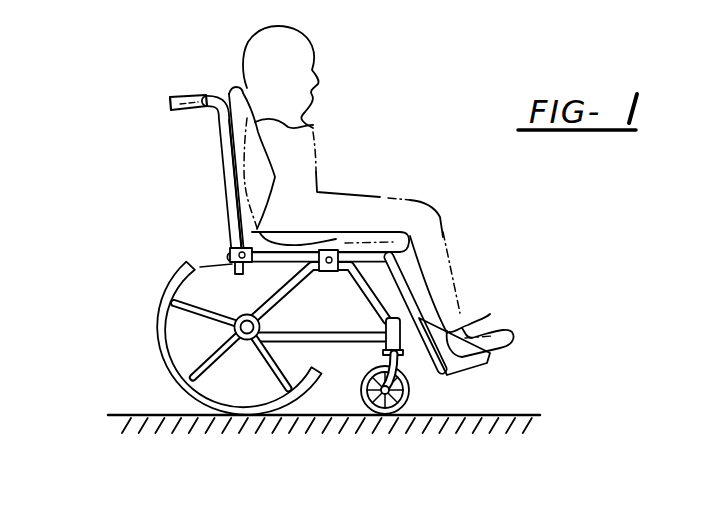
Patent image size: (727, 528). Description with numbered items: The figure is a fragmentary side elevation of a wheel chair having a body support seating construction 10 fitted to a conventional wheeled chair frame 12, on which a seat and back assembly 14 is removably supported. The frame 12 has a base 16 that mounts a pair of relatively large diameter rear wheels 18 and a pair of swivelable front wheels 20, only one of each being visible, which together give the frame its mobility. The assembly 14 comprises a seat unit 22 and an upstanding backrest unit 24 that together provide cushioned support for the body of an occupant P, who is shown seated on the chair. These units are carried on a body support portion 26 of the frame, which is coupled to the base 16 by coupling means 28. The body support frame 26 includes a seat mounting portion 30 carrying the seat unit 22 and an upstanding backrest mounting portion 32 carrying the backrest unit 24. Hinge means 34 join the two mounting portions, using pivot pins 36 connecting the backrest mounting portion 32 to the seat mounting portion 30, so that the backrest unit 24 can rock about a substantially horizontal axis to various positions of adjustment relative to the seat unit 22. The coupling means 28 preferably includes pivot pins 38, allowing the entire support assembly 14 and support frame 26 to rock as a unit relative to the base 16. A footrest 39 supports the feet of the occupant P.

The body support seating construction 10 is at (197, 157).
The wheeled chair frame 12 is at (205, 92).
The seat and back assembly 14 is at (237, 84).
The base 16 is at (350, 340).
The rear wheels 18 is at (158, 312).
The front wheels 20 is at (414, 403).
The seat unit 22 is at (380, 233).
The backrest unit 24 is at (307, 127).
The body support portion 26 is at (233, 221).
The coupling means 28 is at (337, 252).
The seat mounting portion 30 is at (390, 274).
The backrest mounting portion 32 is at (227, 183).
The hinge means 34 is at (228, 255).
The pivot pins 36 is at (178, 266).
The pivot pins 38 is at (329, 258).
The footrest 39 is at (490, 314).
The occupant P is at (310, 58).